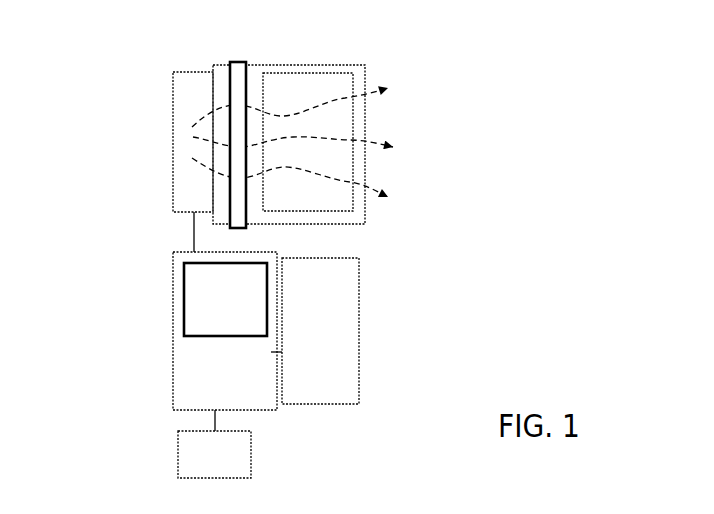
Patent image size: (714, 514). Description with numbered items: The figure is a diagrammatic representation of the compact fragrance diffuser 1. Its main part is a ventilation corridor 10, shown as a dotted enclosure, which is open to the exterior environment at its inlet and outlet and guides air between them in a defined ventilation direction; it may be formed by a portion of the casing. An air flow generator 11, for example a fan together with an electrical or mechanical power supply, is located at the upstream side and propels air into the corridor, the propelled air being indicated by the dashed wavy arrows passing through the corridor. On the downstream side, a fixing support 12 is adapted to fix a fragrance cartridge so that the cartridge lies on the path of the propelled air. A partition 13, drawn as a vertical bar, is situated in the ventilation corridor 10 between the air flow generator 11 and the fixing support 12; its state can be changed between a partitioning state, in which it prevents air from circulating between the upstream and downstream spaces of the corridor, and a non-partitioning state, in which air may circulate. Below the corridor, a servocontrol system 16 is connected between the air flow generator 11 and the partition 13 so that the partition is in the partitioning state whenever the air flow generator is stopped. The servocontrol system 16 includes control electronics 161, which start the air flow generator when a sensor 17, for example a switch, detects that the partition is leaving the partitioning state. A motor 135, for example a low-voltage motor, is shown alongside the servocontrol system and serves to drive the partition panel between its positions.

The compact fragrance diffuser 1 is at (509, 74).
The ventilation corridor 10 is at (353, 64).
The air flow generator 11 is at (172, 94).
The fixing support 12 is at (354, 121).
The partition 13 is at (227, 207).
The servocontrol system 16 is at (172, 376).
The control electronics 161 is at (183, 302).
The motor 135 is at (363, 326).
The sensor 17 is at (177, 460).